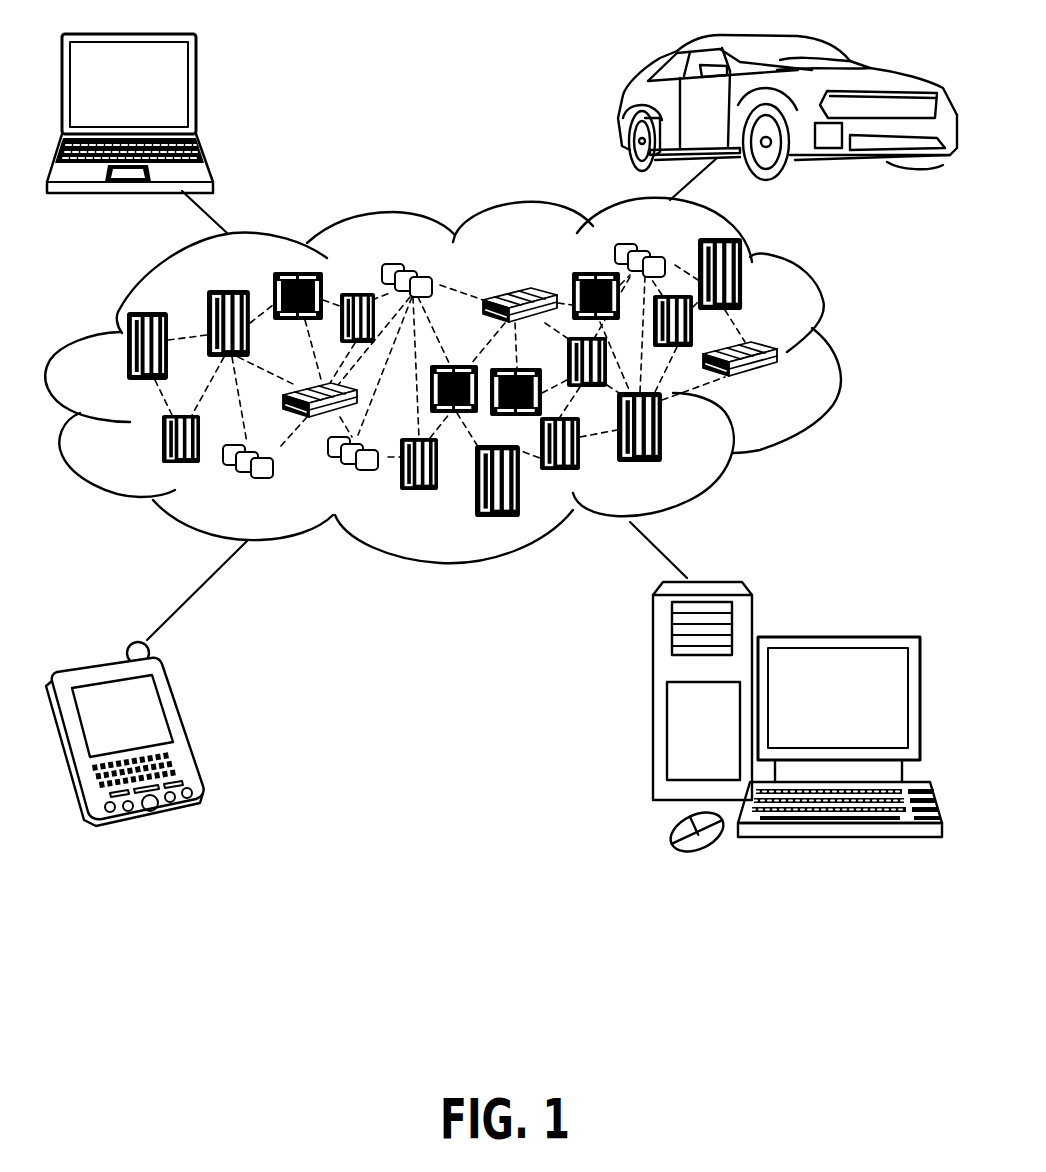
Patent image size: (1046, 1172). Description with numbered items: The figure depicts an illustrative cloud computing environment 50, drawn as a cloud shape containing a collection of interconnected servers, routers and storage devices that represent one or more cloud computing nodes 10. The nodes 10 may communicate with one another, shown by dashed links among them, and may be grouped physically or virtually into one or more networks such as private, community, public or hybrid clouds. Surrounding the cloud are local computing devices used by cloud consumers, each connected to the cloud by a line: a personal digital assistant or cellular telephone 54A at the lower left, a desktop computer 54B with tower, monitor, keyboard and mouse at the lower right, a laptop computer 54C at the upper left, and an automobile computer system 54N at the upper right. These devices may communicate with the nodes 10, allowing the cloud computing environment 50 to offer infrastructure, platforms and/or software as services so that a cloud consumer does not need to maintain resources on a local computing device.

The cloud computing node 10 is at (790, 388).
The cloud computing environment 50 is at (472, 381).
The personal digital assistant or cellular telephone 54A is at (187, 726).
The desktop computer 54B is at (837, 637).
The laptop computer 54C is at (197, 92).
The automobile computer system 54N is at (622, 108).